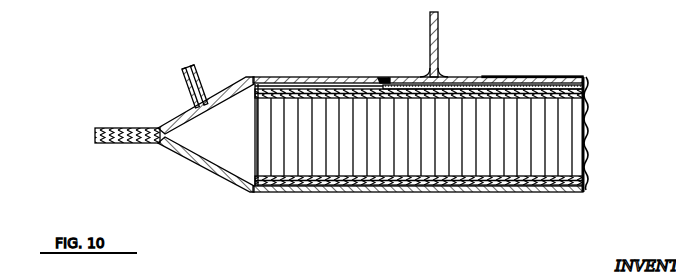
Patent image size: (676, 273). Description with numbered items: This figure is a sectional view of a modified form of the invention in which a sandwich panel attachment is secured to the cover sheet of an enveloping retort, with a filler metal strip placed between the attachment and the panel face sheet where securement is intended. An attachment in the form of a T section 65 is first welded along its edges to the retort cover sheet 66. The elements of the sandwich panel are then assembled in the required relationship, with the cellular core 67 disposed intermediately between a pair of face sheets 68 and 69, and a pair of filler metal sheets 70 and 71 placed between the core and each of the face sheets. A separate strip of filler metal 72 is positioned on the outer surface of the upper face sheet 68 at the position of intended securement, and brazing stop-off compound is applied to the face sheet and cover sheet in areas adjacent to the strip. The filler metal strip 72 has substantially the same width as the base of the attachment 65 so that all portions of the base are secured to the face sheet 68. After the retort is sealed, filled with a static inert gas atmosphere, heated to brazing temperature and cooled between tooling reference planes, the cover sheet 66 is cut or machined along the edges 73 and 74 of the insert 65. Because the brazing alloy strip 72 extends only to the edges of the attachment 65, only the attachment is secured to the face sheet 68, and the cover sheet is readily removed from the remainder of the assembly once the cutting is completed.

The T section 65 is at (437, 45).
The retort cover sheet 66 is at (563, 78).
The cellular core 67 is at (552, 131).
The upper face sheet 68 is at (584, 88).
The face sheet 69 is at (584, 183).
The filler metal sheet 70 is at (583, 108).
The filler metal sheet 71 is at (560, 173).
The filler metal strip 72 is at (467, 78).
The edge of insert 73 is at (397, 77).
The edge of insert 74 is at (482, 78).